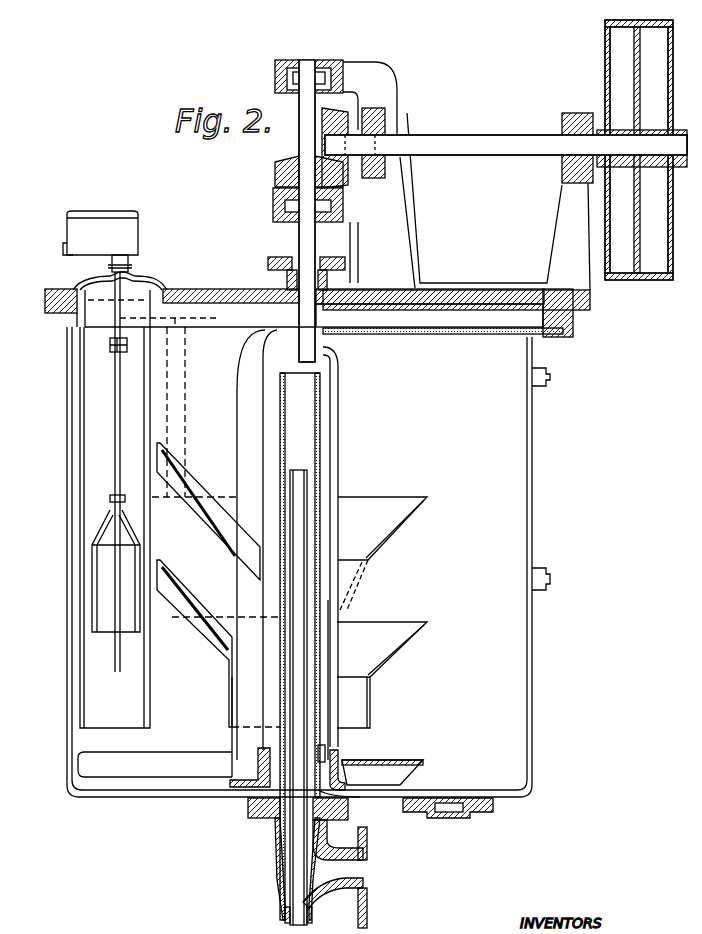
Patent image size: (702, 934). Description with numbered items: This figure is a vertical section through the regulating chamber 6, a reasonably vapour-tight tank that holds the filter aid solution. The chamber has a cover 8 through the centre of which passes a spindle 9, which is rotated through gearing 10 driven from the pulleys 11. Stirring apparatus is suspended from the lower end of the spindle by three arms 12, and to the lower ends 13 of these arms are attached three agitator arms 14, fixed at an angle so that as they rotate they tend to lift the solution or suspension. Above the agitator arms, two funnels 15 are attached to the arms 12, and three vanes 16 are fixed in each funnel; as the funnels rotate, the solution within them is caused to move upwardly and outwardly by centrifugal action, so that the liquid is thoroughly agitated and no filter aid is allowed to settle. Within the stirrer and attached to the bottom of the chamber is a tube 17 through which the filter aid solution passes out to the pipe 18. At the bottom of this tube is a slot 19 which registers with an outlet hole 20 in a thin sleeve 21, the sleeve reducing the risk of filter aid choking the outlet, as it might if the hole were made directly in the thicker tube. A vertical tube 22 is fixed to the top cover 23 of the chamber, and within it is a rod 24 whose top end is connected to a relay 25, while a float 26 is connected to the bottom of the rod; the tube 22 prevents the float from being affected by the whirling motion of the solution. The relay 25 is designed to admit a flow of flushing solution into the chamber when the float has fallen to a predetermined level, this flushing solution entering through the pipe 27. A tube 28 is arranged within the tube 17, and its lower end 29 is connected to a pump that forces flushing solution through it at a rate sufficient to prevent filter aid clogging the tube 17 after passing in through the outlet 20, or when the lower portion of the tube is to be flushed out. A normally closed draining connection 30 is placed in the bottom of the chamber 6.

The regulating chamber 6 is at (308, 562).
The cover 8 is at (452, 334).
The spindle 9 is at (303, 236).
The gearing 10 is at (299, 141).
The pulleys 11 is at (613, 68).
The arms 12 is at (245, 417).
The lower ends of the arms 13 is at (342, 757).
The agitator arms 14 is at (180, 765).
The funnels 15 is at (402, 518).
The vanes 16 is at (197, 493).
The tube 17 is at (322, 462).
The pipe 18 is at (333, 902).
The slot 19 is at (345, 773).
The outlet hole 20 is at (360, 797).
The thin sleeve 21 is at (323, 748).
The vertical tube 22 is at (150, 690).
The top cover 23 is at (205, 292).
The rod 24 is at (117, 440).
The relay 25 is at (127, 235).
The float 26 is at (133, 612).
The pipe 27 is at (175, 442).
The tube 28 is at (310, 492).
The lower end 29 is at (285, 912).
The draining connection 30 is at (453, 806).